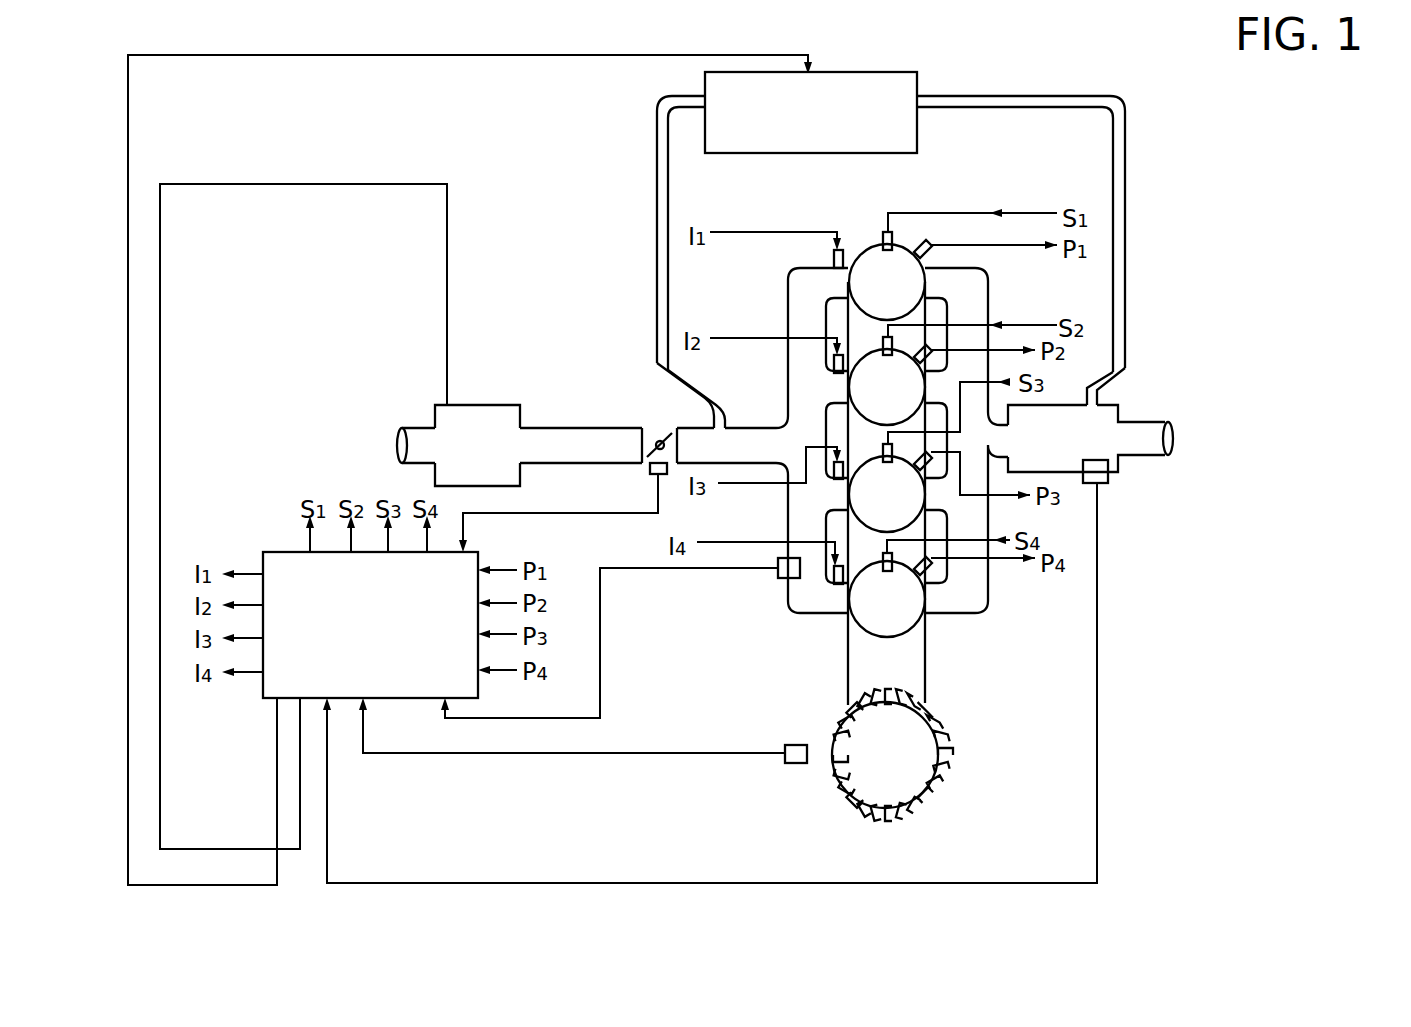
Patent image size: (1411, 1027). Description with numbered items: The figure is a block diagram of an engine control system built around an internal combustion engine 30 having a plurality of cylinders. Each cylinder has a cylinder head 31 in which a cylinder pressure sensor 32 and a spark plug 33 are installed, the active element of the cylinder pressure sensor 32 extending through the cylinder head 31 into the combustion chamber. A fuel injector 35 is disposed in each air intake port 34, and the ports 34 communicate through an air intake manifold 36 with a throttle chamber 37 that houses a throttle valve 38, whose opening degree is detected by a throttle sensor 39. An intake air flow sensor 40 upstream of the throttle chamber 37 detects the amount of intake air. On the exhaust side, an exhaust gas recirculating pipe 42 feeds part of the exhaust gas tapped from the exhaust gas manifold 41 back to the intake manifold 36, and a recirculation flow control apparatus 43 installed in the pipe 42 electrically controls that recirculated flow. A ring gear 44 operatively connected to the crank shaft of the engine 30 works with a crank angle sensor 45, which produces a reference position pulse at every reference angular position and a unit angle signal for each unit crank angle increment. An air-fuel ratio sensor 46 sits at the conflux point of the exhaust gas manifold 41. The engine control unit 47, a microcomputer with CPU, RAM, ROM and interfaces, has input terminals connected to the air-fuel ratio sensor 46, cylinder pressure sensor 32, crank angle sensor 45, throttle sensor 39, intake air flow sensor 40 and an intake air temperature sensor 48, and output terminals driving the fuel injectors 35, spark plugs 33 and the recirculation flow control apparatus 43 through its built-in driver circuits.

The internal combustion engine 30 is at (939, 670).
The cylinder head 31 is at (856, 256).
The cylinder pressure sensor 32 is at (931, 252).
The spark plug 33 is at (886, 337).
The air intake port 34 is at (822, 287).
The fuel injector 35 is at (834, 258).
The air intake manifold 36 is at (698, 463).
The throttle chamber 37 is at (662, 428).
The throttle valve 38 is at (655, 440).
The throttle sensor 39 is at (650, 470).
The intake air flow sensor 40 is at (492, 405).
The exhaust gas manifold 41 is at (988, 300).
The exhaust gas recirculating pipe 42 is at (1007, 97).
The recirculation flow control apparatus 43 is at (858, 72).
The ring gear 44 is at (950, 782).
The crank angle sensor 45 is at (795, 764).
The air-fuel ratio sensor 46 is at (1108, 483).
The engine control unit 47 is at (263, 698).
The intake air temperature sensor 48 is at (780, 577).